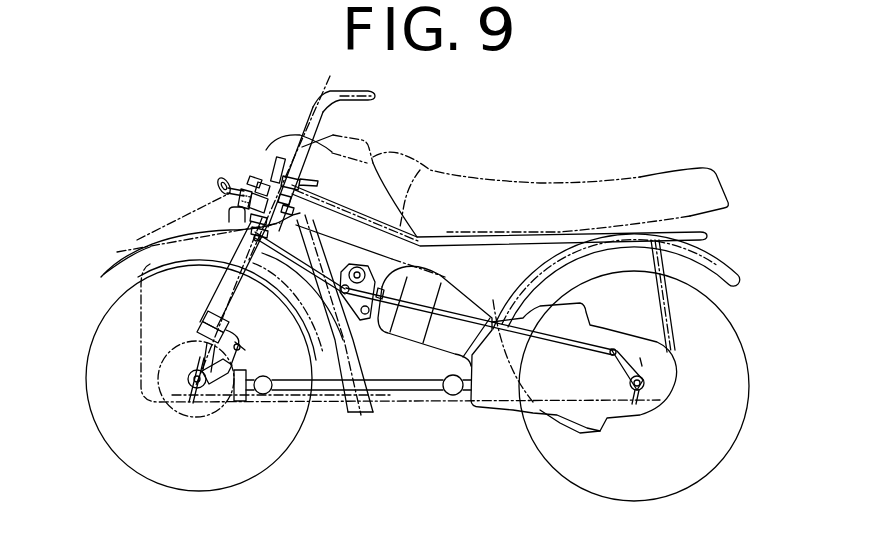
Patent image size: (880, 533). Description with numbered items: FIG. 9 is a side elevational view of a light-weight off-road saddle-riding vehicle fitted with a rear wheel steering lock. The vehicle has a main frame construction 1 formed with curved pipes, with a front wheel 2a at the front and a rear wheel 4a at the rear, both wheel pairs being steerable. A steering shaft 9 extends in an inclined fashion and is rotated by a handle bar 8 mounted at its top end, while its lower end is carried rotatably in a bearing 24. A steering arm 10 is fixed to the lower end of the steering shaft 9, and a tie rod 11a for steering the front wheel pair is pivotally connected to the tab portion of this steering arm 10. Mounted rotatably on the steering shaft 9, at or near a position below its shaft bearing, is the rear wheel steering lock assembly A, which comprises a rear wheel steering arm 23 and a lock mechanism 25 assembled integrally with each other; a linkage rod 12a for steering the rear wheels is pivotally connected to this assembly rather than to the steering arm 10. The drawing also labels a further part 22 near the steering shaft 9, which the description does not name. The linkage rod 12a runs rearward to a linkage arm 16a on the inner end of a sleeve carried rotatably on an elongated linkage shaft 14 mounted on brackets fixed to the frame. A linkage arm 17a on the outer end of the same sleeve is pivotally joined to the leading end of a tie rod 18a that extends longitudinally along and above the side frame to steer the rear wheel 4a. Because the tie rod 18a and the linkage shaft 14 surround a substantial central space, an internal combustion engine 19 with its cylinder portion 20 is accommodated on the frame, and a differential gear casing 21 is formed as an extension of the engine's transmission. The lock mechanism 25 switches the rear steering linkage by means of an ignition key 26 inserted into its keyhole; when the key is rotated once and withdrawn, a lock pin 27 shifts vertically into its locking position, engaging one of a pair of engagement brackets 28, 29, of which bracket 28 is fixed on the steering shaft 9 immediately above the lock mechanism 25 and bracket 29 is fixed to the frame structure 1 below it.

The main frame construction 1 is at (420, 170).
The front wheel 2a is at (273, 460).
The rear wheel 4a is at (567, 470).
The handle bar 8 is at (331, 91).
The steering shaft 9 is at (227, 308).
The steering arm 10 is at (207, 325).
The tie rod 11a is at (192, 360).
The linkage rod 12a is at (294, 265).
The linkage shaft 14 is at (342, 263).
The linkage arm 16a is at (370, 316).
The linkage arm 17a is at (347, 400).
The tie rod 18a is at (422, 402).
The internal combustion engine 19 is at (578, 322).
The cylinder portion 20 is at (435, 283).
The differential gear casing 21 is at (630, 410).
The master cylinder rod 22 is at (281, 156).
The rear wheel steering arm 23 is at (265, 228).
The bearing 24 is at (203, 328).
The lock mechanism 25 is at (254, 178).
The ignition key 26 is at (220, 179).
The lock pin 27 is at (262, 182).
The engagement bracket 28 is at (300, 181).
The engagement bracket 29 is at (252, 220).
The rear wheel steering lock assembly A is at (246, 181).